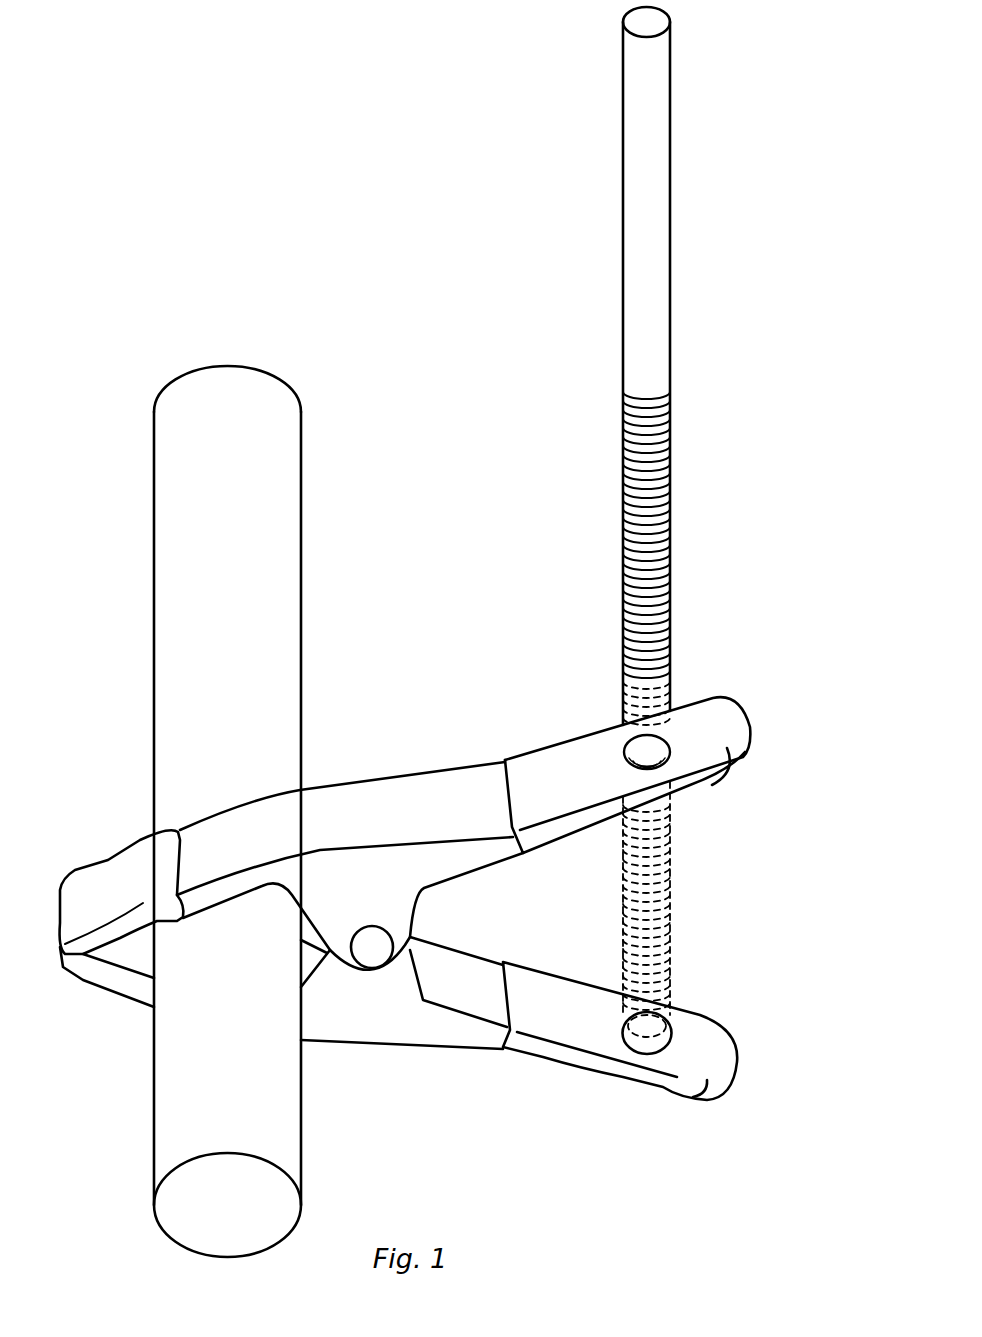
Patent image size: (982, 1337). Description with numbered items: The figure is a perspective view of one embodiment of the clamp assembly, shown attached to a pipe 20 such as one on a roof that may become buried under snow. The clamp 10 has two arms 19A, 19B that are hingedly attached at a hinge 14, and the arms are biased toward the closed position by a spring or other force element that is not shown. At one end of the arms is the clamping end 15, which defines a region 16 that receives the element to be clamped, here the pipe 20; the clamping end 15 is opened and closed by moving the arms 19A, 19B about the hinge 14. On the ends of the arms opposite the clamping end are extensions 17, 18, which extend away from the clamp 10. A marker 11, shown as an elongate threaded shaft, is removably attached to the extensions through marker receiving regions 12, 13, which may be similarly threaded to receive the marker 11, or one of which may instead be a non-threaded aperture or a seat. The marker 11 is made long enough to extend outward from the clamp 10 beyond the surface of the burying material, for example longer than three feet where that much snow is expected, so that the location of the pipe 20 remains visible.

The clamp 10 is at (295, 831).
The marker 11 is at (623, 207).
The marker receiving region 12 is at (657, 777).
The marker receiving region 13 is at (679, 1036).
The hinge 14 is at (370, 952).
The clamping end 15 is at (108, 880).
The region 16 is at (143, 947).
The extension 17 is at (668, 1049).
The extension 18 is at (679, 758).
The arm 19A is at (370, 805).
The arm 19B is at (407, 1028).
The pipe 20 is at (180, 1072).